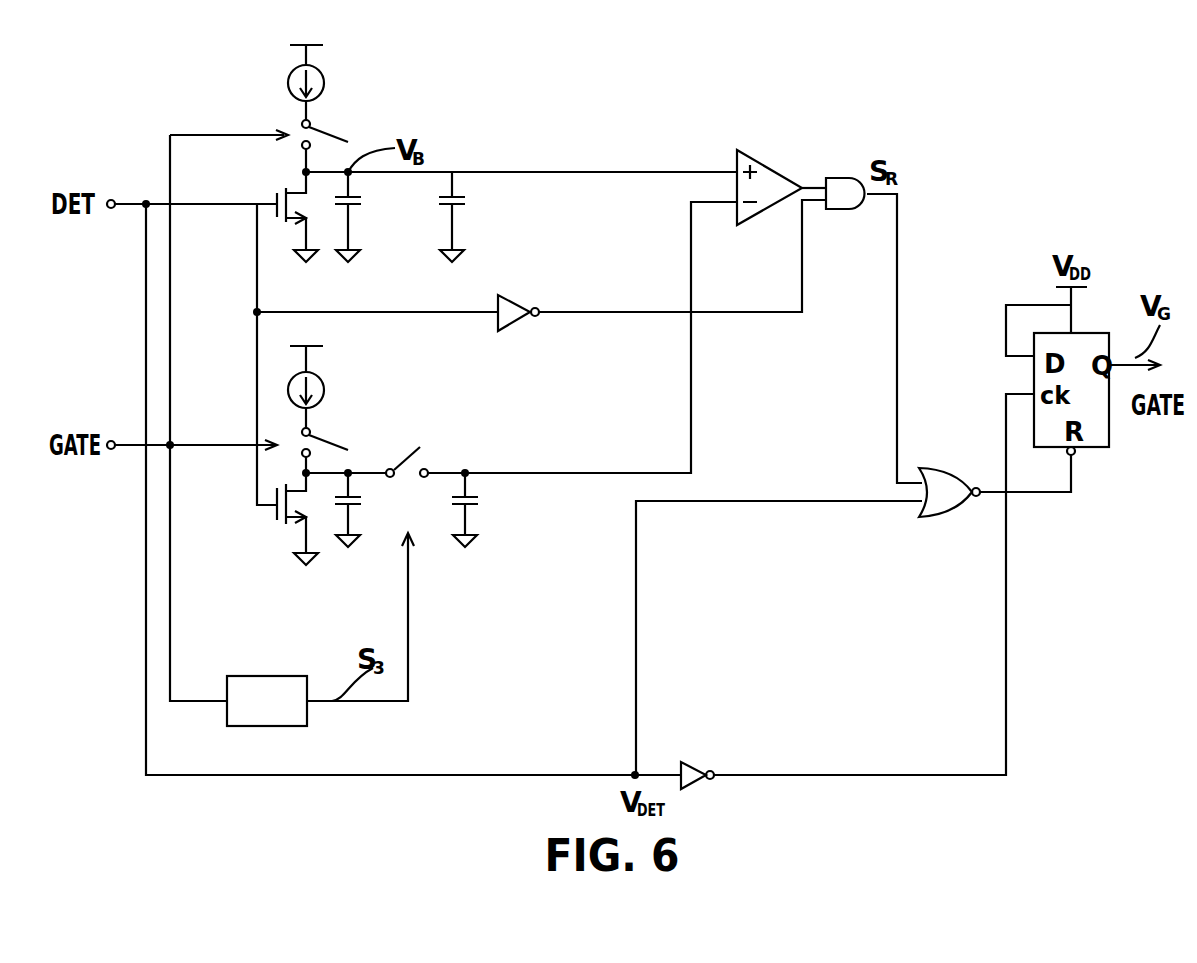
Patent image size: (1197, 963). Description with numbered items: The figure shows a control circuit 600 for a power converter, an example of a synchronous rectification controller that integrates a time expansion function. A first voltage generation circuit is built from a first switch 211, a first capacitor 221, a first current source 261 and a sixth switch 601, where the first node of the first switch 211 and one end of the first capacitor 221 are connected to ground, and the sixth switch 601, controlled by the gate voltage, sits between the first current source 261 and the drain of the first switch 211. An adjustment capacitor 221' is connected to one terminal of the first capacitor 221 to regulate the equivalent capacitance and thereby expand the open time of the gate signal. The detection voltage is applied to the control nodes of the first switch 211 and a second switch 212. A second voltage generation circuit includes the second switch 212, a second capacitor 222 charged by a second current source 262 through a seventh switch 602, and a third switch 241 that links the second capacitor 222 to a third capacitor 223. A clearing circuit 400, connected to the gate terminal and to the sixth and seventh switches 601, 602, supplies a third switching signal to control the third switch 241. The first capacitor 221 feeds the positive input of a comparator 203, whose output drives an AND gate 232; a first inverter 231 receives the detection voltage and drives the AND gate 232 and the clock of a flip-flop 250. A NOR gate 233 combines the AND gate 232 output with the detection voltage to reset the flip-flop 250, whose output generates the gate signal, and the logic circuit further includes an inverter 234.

The control circuit 600 is at (1066, 131).
The first current source 261 is at (327, 82).
The sixth switch 601 is at (337, 136).
The first switch 211 is at (276, 209).
The first capacitor 221 is at (363, 217).
The adjustment capacitor 221' is at (471, 217).
The comparator 203 is at (769, 165).
The AND gate 232 is at (845, 216).
The first inverter 231 is at (524, 297).
The second current source 262 is at (325, 380).
The seventh switch 602 is at (337, 441).
The third switch 241 is at (371, 443).
The second capacitor 222 is at (373, 510).
The third capacitor 223 is at (491, 510).
The second switch 212 is at (287, 519).
The NOR gate 233 is at (944, 513).
The flip-flop 250 is at (1085, 412).
The inverter 234 is at (698, 755).
The clearing circuit 400 is at (267, 701).